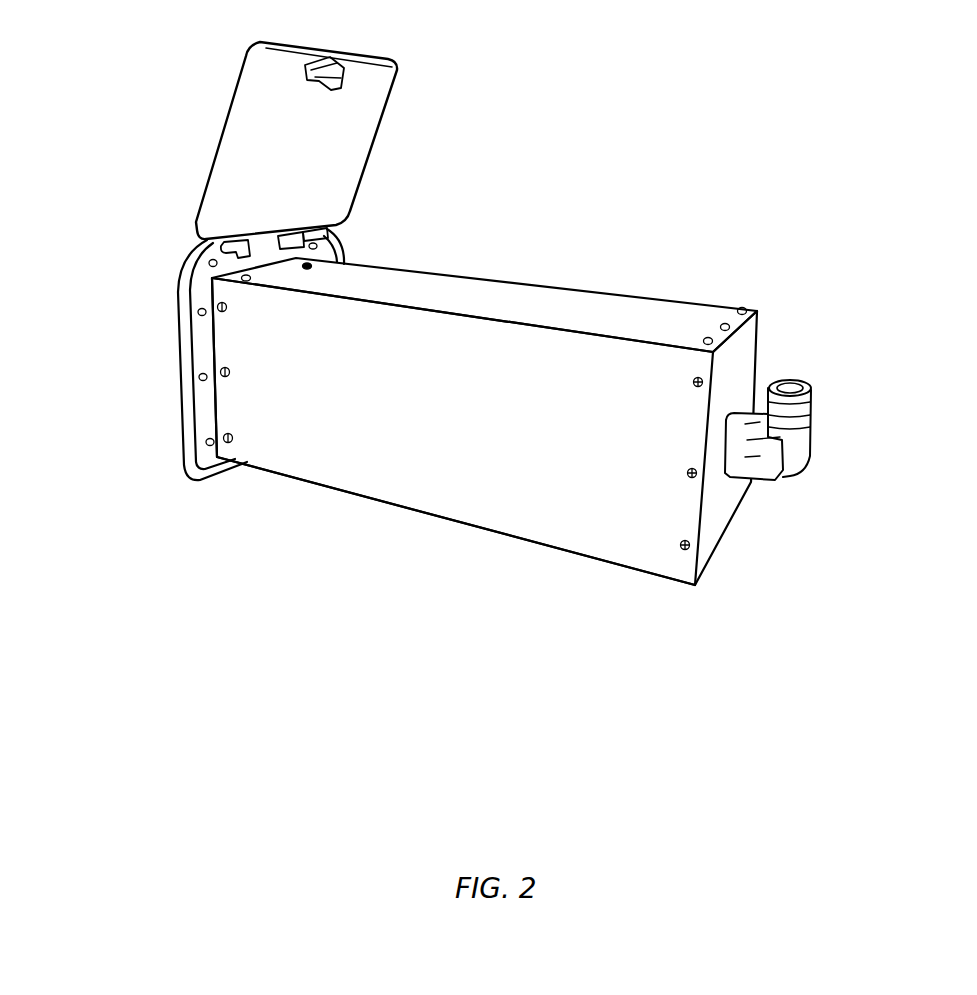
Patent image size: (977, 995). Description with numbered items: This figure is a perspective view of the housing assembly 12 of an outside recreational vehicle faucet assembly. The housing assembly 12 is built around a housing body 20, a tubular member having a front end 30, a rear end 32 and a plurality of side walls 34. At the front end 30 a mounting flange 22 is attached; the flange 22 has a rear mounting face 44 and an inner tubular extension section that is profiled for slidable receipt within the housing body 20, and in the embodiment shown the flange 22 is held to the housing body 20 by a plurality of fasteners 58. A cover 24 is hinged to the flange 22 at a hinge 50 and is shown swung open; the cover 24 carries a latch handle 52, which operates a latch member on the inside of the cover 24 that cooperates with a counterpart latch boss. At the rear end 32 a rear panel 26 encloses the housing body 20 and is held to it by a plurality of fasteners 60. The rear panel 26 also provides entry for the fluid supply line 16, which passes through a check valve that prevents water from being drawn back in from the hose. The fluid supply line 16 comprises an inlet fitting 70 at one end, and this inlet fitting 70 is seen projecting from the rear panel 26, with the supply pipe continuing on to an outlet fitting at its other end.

The housing assembly 12 is at (677, 169).
The fluid supply line 16 is at (770, 492).
The housing body 20 is at (514, 468).
The mounting flange 22 is at (241, 281).
The cover 24 is at (325, 140).
The rear panel 26 is at (737, 360).
The front end 30 is at (233, 397).
The rear end 32 is at (687, 507).
The side walls 34 is at (453, 460).
The rear mounting face 44 is at (200, 397).
The hinge 50 is at (349, 232).
The latch handle 52 is at (307, 70).
The fasteners 58 is at (227, 309).
The fasteners 60 is at (696, 386).
The inlet fitting 70 is at (812, 433).